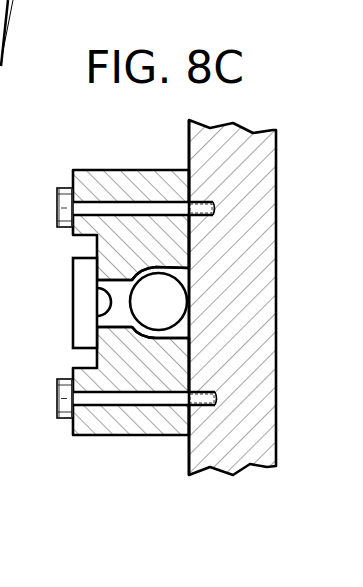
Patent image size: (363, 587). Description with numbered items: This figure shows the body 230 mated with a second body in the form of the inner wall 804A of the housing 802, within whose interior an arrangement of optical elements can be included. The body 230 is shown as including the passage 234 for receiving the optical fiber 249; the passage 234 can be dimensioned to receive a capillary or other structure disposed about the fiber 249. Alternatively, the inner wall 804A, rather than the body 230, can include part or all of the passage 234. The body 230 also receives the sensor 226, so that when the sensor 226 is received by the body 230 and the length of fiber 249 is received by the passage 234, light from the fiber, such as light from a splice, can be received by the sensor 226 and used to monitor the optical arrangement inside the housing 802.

The housing 802 is at (245, 305).
The inner wall 804A is at (189, 152).
The body 230 is at (110, 417).
The sensor 226 is at (80, 328).
The optical fiber 249 is at (143, 292).
The passage 234 is at (180, 275).